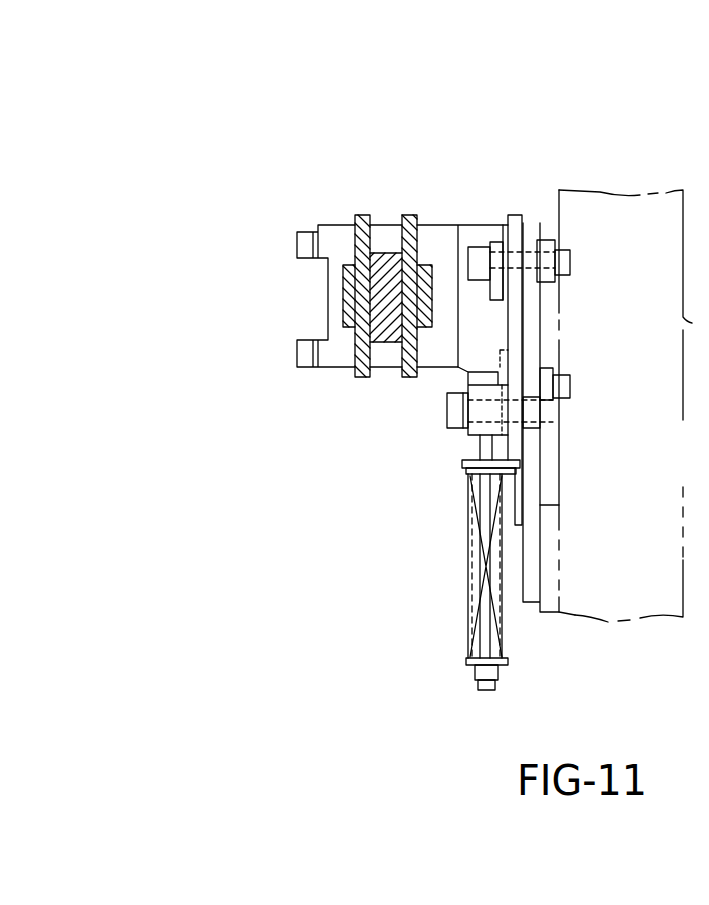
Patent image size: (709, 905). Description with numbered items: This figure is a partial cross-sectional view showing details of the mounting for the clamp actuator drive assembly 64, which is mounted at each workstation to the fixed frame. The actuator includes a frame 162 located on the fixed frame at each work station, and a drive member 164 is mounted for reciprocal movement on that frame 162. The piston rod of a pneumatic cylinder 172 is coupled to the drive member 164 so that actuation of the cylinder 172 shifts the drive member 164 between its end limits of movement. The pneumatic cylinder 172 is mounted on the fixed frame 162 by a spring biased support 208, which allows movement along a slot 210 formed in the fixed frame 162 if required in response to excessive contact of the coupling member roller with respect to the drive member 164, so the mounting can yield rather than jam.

The clamp actuator drive assembly 64 is at (330, 382).
The pneumatic cylinder 172 is at (355, 215).
The drive member 164 is at (383, 253).
The frame 162 is at (512, 213).
The slot 210 is at (527, 252).
The spring biased support 208 is at (468, 601).